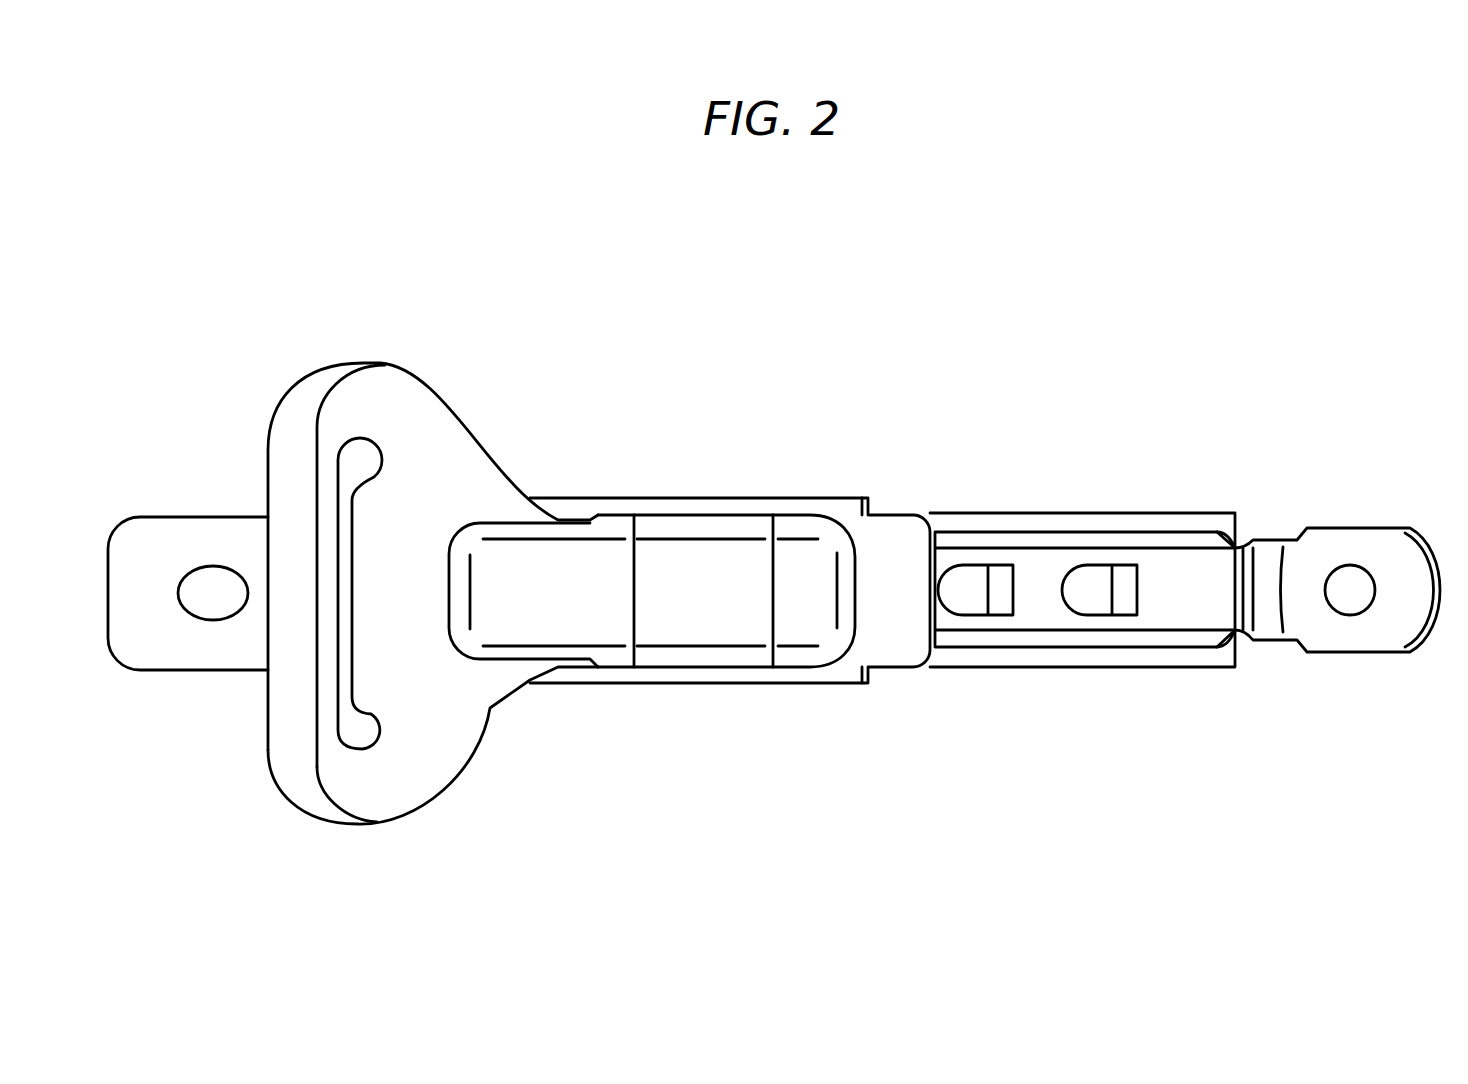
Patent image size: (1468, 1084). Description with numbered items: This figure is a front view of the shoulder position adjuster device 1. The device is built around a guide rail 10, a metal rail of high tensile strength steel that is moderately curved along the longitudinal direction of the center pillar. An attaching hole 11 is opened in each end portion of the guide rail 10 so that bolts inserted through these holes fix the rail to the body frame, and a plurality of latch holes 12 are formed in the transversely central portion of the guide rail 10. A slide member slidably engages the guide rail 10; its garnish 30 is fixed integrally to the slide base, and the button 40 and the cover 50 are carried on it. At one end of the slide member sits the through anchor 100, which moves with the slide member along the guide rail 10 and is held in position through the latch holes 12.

The shoulder position adjuster device 1 is at (1120, 316).
The guide rail 10 is at (1157, 668).
The attaching hole 11 is at (210, 603).
The latch hole 12 is at (973, 603).
The garnish 30 is at (893, 650).
The button 40 is at (700, 617).
The cover 50 is at (808, 655).
The through anchor 100 is at (383, 832).